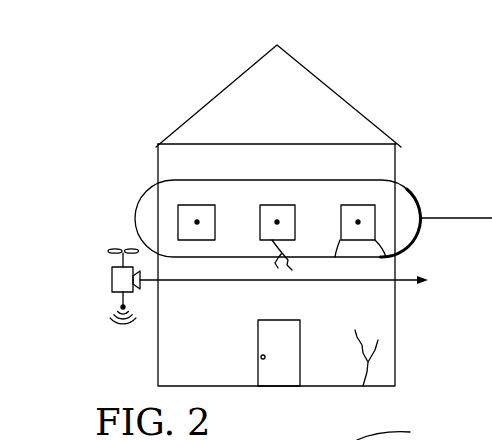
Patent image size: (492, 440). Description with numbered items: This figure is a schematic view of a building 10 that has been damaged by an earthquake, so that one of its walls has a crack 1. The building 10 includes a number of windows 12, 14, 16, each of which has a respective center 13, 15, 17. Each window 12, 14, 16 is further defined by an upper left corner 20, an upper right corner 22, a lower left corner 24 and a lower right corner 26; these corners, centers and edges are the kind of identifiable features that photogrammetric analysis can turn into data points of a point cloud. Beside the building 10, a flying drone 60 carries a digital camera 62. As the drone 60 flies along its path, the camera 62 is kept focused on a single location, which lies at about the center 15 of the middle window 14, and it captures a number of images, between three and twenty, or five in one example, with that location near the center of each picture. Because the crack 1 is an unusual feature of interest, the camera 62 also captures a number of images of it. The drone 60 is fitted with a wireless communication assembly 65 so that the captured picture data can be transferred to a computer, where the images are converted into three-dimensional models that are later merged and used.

The crack 1 is at (266, 243).
The building 10 is at (155, 87).
The window 12 is at (215, 223).
The center 13 is at (198, 220).
The window 14 is at (295, 223).
The center 15 is at (278, 220).
The window 16 is at (377, 223).
The center 17 is at (360, 220).
The upper left corner 20 is at (350, 204).
The upper right corner 22 is at (396, 180).
The lower left corner 24 is at (335, 258).
The lower right corner 26 is at (392, 257).
The flying drone 60 is at (106, 236).
The digital camera 62 is at (118, 294).
The wireless communication assembly 65 is at (127, 307).